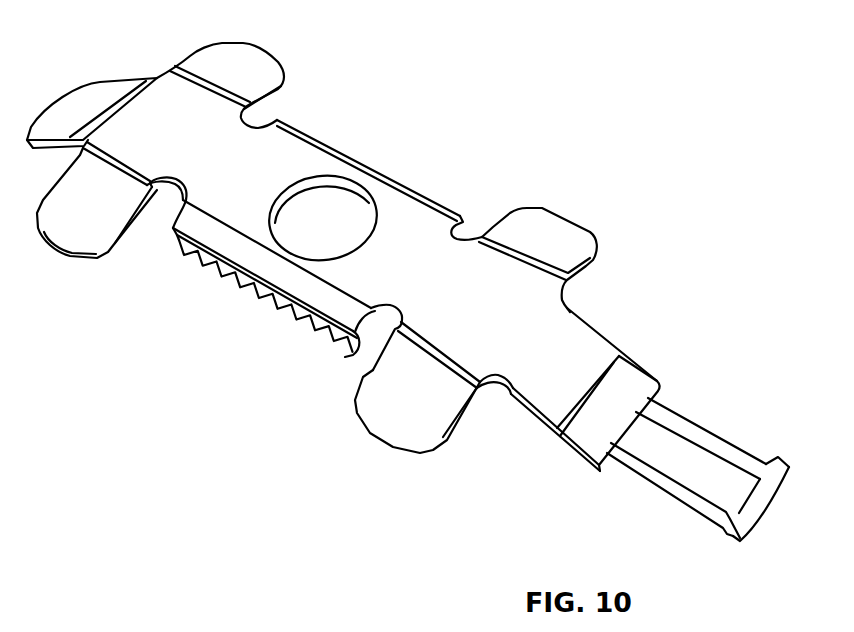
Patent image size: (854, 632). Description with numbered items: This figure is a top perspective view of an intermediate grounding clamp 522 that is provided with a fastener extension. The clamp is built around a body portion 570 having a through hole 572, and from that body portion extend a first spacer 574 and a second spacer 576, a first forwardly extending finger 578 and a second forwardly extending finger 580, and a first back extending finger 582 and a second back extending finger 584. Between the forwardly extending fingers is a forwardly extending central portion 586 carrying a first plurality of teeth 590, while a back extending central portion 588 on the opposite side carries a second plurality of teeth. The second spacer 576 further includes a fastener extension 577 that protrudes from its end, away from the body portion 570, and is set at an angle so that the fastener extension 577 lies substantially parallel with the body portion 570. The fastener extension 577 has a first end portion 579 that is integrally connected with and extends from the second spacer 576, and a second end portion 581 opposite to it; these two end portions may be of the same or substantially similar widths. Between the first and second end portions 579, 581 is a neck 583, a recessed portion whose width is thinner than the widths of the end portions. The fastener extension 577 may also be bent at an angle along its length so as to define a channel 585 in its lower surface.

The intermediate grounding clamp 522 is at (501, 60).
The body portion 570 is at (407, 220).
The through hole 572 is at (307, 180).
The first spacer 574 is at (73, 113).
The second spacer 576 is at (593, 348).
The fastener extension 577 is at (710, 432).
The first forwardly extending finger 578 is at (110, 218).
The first end portion 579 is at (590, 437).
The second forwardly extending finger 580 is at (430, 422).
The second end portion 581 is at (777, 460).
The first back extending finger 582 is at (234, 62).
The neck 583 is at (672, 487).
The second back extending finger 584 is at (561, 237).
The channel 585 is at (768, 495).
The forwardly extending central portion 586 is at (242, 250).
The back extending central portion 588 is at (360, 164).
The first plurality of teeth 590 is at (283, 315).